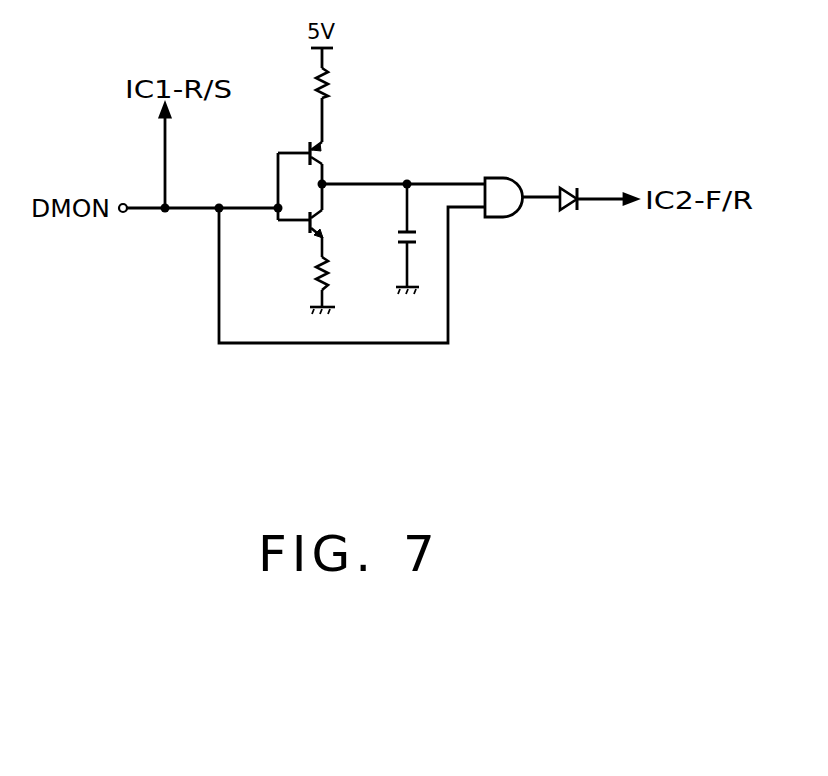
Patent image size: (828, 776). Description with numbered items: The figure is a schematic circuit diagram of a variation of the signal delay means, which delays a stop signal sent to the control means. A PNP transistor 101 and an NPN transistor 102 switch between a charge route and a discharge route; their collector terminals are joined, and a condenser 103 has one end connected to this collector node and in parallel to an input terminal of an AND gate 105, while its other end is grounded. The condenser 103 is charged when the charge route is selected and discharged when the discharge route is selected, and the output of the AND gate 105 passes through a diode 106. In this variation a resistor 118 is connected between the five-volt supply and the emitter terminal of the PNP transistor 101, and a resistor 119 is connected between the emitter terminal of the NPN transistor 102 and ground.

The PNP transistor 101 is at (315, 143).
The NPN transistor 102 is at (312, 233).
The condenser 103 is at (402, 248).
The AND gate 105 is at (508, 178).
The diode 106 is at (572, 187).
The resistor 118 is at (325, 73).
The resistor 119 is at (331, 268).